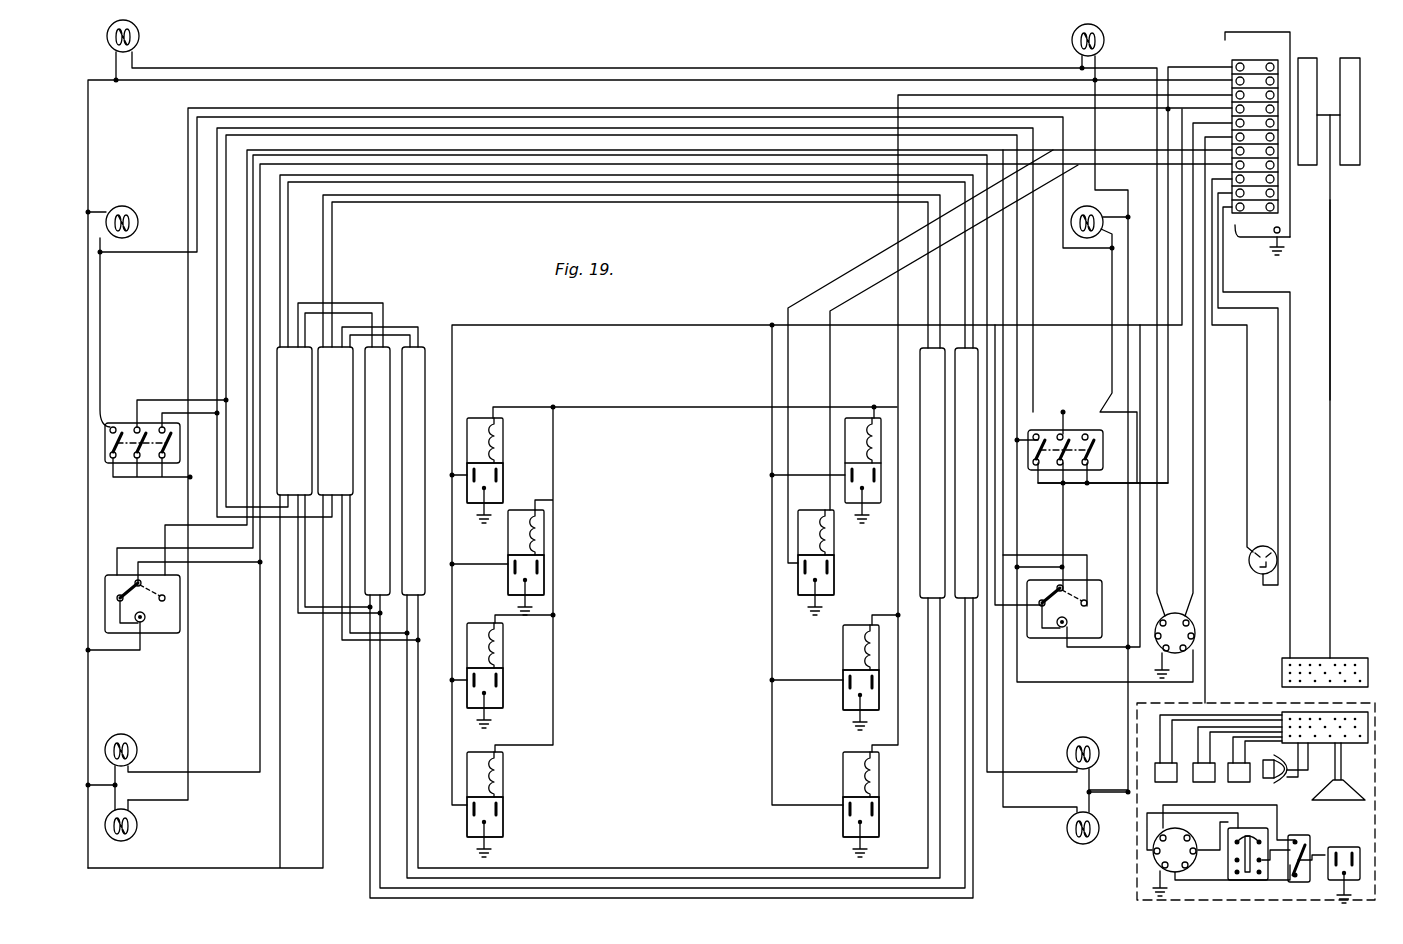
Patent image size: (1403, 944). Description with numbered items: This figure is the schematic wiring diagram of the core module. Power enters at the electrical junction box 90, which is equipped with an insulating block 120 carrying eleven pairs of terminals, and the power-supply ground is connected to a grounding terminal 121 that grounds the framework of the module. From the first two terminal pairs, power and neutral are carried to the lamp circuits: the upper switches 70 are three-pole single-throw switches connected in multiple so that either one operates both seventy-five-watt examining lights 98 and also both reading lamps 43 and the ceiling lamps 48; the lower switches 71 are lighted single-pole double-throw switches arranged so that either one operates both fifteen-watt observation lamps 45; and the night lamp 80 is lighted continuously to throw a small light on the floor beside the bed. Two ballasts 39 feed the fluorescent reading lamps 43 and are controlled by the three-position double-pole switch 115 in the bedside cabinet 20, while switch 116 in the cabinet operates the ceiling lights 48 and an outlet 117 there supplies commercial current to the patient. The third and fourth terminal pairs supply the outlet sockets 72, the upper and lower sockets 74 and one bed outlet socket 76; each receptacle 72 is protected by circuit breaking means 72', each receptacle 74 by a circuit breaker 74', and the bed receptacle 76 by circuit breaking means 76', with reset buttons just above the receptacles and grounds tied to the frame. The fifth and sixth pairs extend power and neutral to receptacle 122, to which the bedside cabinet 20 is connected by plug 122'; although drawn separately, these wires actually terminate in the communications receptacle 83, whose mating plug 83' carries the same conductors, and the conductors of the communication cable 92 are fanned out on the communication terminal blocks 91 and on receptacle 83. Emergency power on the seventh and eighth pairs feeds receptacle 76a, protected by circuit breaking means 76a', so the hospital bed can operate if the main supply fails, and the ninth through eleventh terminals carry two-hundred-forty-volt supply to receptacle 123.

The bedside cabinet 20 is at (1240, 702).
The ballast 39 is at (315, 421).
The reading lamp 43 is at (377, 360).
The observation lamp 45 is at (130, 735).
The ceiling lamp 48 is at (140, 36).
The upper switch 70 is at (120, 420).
The lower switch 71 is at (172, 628).
The outlet socket 72 is at (501, 480).
The circuit breaking means 72' is at (674, 448).
The socket 74 is at (691, 749).
The circuit breaker 74' is at (673, 719).
The bed outlet socket 76 is at (559, 575).
The circuit breaking means 76' is at (561, 562).
The receptacle 76a is at (840, 575).
The circuit breaking means 76a' is at (842, 562).
The night lamp 80 is at (137, 827).
The communications receptacle 83 is at (1325, 654).
The communications receptacle plug 83' is at (1321, 682).
The electrical junction box 90 is at (1290, 42).
The communication terminal block 91 is at (1310, 165).
The communication cable 92 is at (1330, 290).
The examining light 98 is at (130, 208).
The switch 115 is at (1268, 816).
The switch 116 is at (1293, 835).
The outlet 117 is at (1350, 847).
The insulating block 120 is at (1232, 60).
The grounding terminal 121 is at (1283, 232).
The receptacle 122 is at (1207, 645).
The plug 122' is at (1142, 862).
The 240-volt receptacle 123 is at (1253, 572).